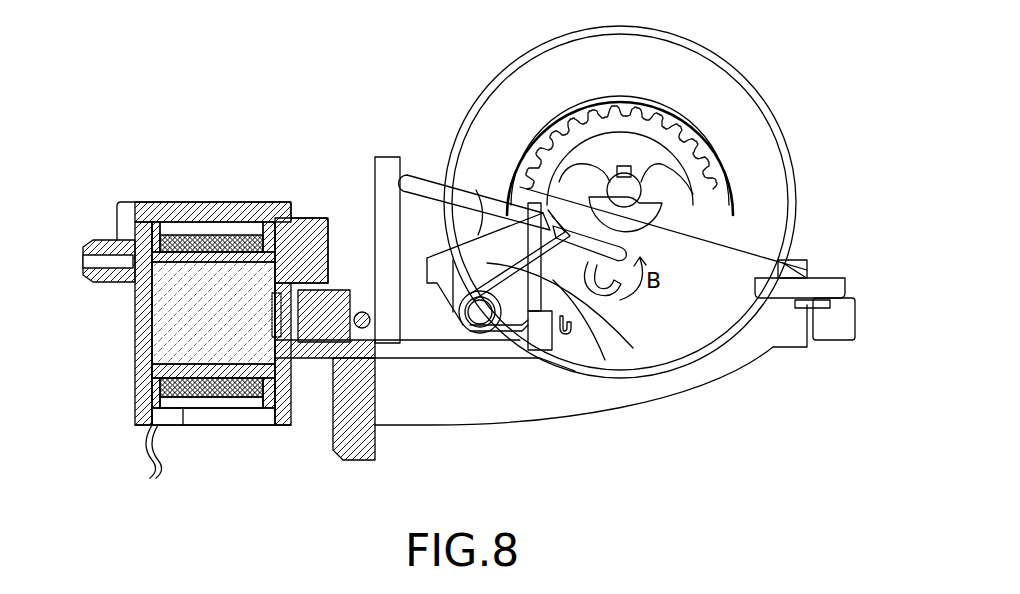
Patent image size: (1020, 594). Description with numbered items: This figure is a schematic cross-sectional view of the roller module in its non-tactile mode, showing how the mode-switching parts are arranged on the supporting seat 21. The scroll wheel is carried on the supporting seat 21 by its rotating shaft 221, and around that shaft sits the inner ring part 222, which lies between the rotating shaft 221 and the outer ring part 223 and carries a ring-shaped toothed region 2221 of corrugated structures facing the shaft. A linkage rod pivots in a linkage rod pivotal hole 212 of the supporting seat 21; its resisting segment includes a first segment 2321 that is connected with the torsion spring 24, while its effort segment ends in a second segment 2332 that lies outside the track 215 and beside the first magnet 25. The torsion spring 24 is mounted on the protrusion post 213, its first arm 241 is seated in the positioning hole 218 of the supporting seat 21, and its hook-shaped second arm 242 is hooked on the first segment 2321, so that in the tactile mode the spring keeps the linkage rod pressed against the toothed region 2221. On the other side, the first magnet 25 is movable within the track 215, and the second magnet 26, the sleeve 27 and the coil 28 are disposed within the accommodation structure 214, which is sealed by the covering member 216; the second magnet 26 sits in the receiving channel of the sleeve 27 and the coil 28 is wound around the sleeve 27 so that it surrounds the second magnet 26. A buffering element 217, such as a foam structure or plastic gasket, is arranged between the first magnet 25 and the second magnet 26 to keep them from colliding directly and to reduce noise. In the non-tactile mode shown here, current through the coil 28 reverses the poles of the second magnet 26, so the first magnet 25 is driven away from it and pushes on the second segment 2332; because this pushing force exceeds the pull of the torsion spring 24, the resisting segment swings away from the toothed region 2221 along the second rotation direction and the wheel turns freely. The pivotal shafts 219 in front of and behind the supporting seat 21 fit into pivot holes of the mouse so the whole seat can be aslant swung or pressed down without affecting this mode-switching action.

The supporting seat 21 is at (713, 370).
The linkage rod pivotal hole 212 is at (418, 172).
The protrusion post 213 is at (470, 312).
The accommodation structure 214 is at (142, 387).
The track 215 is at (290, 313).
The covering member 216 is at (190, 207).
The buffering element 217 is at (293, 360).
The positioning hole 218 is at (538, 342).
The pivotal shaft 219 is at (110, 238).
The rotating shaft 221 is at (607, 195).
The inner ring part 222 is at (712, 150).
The toothed region 2221 is at (667, 120).
The outer ring part 223 is at (770, 170).
The first segment 2321 is at (483, 212).
The second segment 2332 is at (373, 320).
The torsion spring 24 is at (433, 262).
The first arm 241 is at (580, 300).
The second arm 242 is at (637, 300).
The first magnet 25 is at (327, 317).
The second magnet 26 is at (228, 300).
The sleeve 27 is at (230, 397).
The coil 28 is at (193, 383).